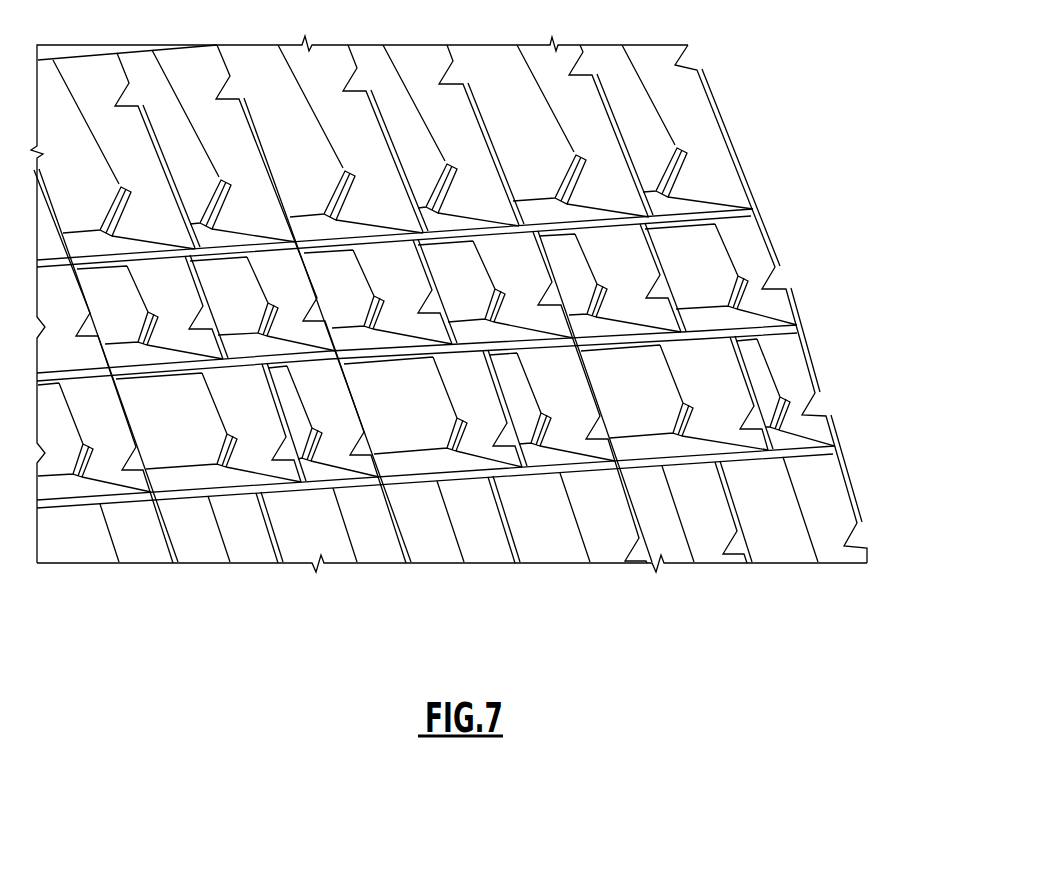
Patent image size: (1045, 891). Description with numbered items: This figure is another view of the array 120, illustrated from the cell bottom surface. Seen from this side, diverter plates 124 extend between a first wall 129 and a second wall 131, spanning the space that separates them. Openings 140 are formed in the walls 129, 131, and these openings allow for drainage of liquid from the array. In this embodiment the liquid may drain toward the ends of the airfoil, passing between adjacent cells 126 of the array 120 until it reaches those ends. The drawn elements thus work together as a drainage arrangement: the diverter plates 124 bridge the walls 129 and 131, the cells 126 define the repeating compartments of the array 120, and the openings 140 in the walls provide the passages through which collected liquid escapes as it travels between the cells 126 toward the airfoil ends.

The array 120 is at (822, 282).
The diverter plates 124 is at (752, 217).
The cells 126 is at (653, 135).
The wall 129 is at (693, 261).
The wall 131 is at (672, 320).
The openings 140 is at (823, 408).